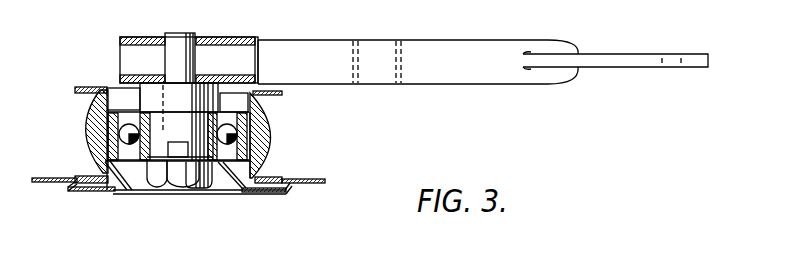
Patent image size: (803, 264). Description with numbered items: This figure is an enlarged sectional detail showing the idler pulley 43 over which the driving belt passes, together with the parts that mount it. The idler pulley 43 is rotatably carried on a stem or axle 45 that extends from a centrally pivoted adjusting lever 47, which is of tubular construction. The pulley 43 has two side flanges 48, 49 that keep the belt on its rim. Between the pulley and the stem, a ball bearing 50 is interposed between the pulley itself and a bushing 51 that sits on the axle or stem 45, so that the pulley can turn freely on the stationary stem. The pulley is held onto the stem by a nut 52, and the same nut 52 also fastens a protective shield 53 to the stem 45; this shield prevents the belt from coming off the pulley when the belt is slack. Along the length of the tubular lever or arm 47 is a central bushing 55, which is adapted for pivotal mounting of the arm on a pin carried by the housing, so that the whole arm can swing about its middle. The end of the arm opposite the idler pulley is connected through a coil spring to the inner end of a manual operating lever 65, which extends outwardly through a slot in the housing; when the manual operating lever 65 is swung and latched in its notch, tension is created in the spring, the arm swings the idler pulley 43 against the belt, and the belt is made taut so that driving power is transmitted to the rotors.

The idler pulley 43 is at (279, 146).
The stem or axle 45 is at (175, 47).
The adjusting lever 47 is at (293, 47).
The side flange 48 is at (282, 94).
The side flange 49 is at (80, 176).
The ball bearing 50 is at (128, 123).
The bushing 51 is at (157, 123).
The nut 52 is at (190, 173).
The protective shield 53 is at (312, 183).
The central bushing 55 is at (392, 50).
The manual operating lever 65 is at (612, 62).